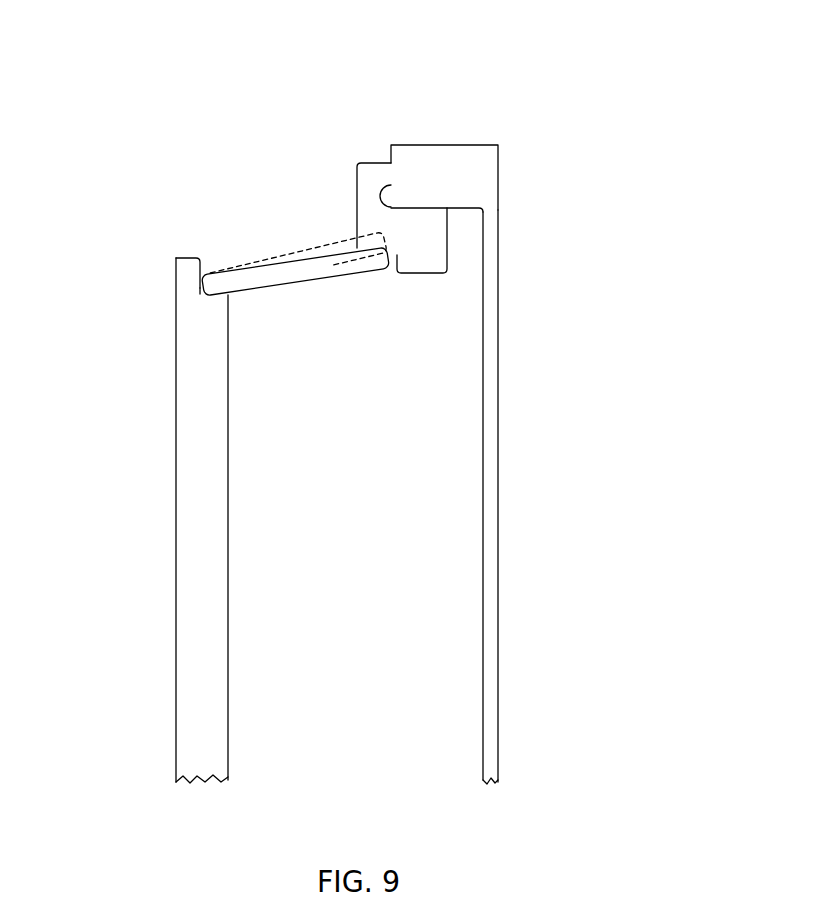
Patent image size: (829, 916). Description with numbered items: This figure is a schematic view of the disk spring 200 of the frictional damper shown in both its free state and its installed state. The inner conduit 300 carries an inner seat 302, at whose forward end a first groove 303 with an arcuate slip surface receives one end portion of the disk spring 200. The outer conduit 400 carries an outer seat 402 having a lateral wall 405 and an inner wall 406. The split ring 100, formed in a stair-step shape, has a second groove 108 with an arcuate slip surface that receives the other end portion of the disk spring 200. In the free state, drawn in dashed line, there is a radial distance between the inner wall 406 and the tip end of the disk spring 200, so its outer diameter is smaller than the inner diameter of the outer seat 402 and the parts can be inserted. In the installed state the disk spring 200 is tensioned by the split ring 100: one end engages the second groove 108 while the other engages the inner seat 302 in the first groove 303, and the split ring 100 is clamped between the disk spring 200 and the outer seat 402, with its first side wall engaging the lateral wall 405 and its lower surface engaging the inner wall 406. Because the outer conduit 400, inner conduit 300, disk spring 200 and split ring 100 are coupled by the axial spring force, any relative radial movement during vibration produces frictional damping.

The split ring 100 is at (441, 235).
The second groove 108 is at (392, 271).
The disk spring 200 is at (306, 283).
The inner conduit 300 is at (145, 520).
The inner seat 302 is at (182, 268).
The first groove 303 is at (198, 292).
The outer conduit 400 is at (499, 363).
The outer seat 402 is at (417, 158).
The lateral wall 405 is at (458, 207).
The inner wall 406 is at (388, 158).